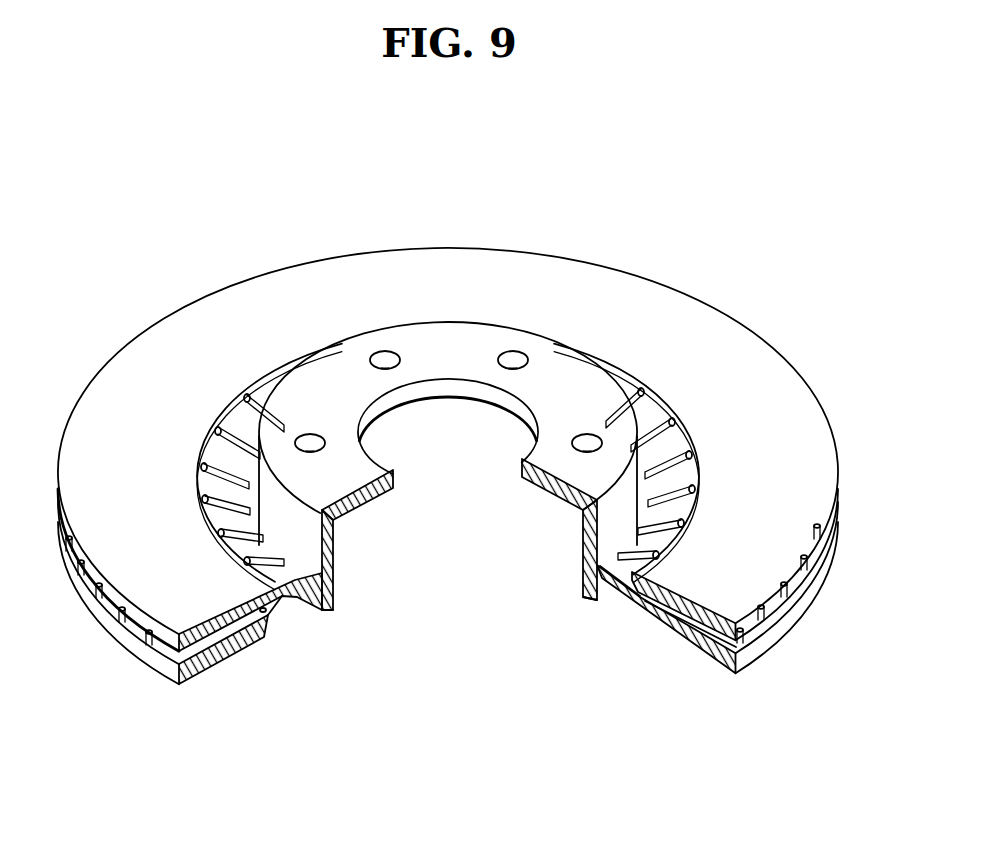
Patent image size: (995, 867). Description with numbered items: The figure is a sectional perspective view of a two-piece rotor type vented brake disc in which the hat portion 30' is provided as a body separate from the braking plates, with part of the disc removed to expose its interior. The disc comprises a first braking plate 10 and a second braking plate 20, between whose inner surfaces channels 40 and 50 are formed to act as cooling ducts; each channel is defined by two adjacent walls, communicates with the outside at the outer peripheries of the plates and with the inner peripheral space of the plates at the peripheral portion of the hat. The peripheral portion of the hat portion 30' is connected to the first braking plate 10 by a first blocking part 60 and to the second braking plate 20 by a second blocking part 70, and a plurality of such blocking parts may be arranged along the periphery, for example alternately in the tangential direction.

The first braking plate 10 is at (282, 254).
The second braking plate 20 is at (706, 676).
The hat portion 30' is at (448, 408).
The channel 40 is at (180, 660).
The channel 50 is at (737, 658).
The first blocking part 60 is at (306, 598).
The second blocking part 70 is at (626, 602).